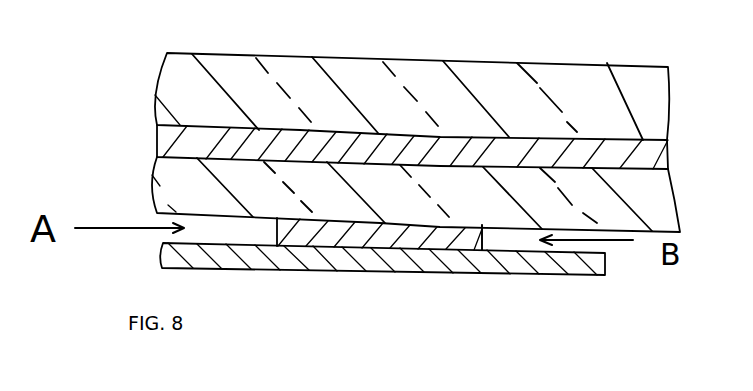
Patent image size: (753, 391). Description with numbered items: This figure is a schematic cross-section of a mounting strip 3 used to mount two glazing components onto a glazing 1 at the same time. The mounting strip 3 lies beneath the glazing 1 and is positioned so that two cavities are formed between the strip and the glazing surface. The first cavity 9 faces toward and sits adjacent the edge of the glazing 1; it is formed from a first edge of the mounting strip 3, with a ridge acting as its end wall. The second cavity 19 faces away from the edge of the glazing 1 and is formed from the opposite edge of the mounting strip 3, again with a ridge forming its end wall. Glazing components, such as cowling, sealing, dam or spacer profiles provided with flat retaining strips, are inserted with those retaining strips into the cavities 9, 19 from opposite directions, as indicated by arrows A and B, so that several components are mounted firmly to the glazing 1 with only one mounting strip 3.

The glazing 1 is at (236, 52).
The mounting strip 3 is at (537, 267).
The cavity 9 is at (272, 234).
The cavity 19 is at (492, 243).